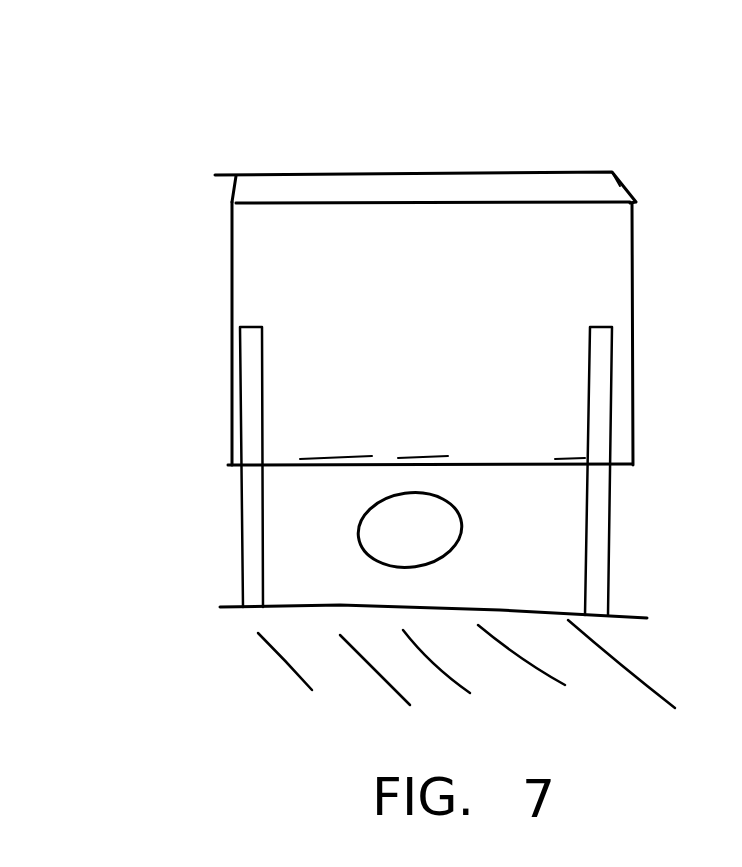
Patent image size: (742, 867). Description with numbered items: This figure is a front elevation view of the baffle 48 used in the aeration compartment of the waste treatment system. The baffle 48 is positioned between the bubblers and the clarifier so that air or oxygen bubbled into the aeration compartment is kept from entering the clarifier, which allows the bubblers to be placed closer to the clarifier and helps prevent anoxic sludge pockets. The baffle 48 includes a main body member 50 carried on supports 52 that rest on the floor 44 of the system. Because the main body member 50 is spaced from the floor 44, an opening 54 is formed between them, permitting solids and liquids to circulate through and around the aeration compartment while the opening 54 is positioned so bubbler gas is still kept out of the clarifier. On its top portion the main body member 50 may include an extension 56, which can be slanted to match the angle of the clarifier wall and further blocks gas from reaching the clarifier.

The floor 44 is at (300, 607).
The baffle 48 is at (175, 90).
The main body member 50 is at (310, 266).
The supports 52 is at (243, 515).
The opening 54 is at (409, 530).
The extension 56 is at (232, 186).